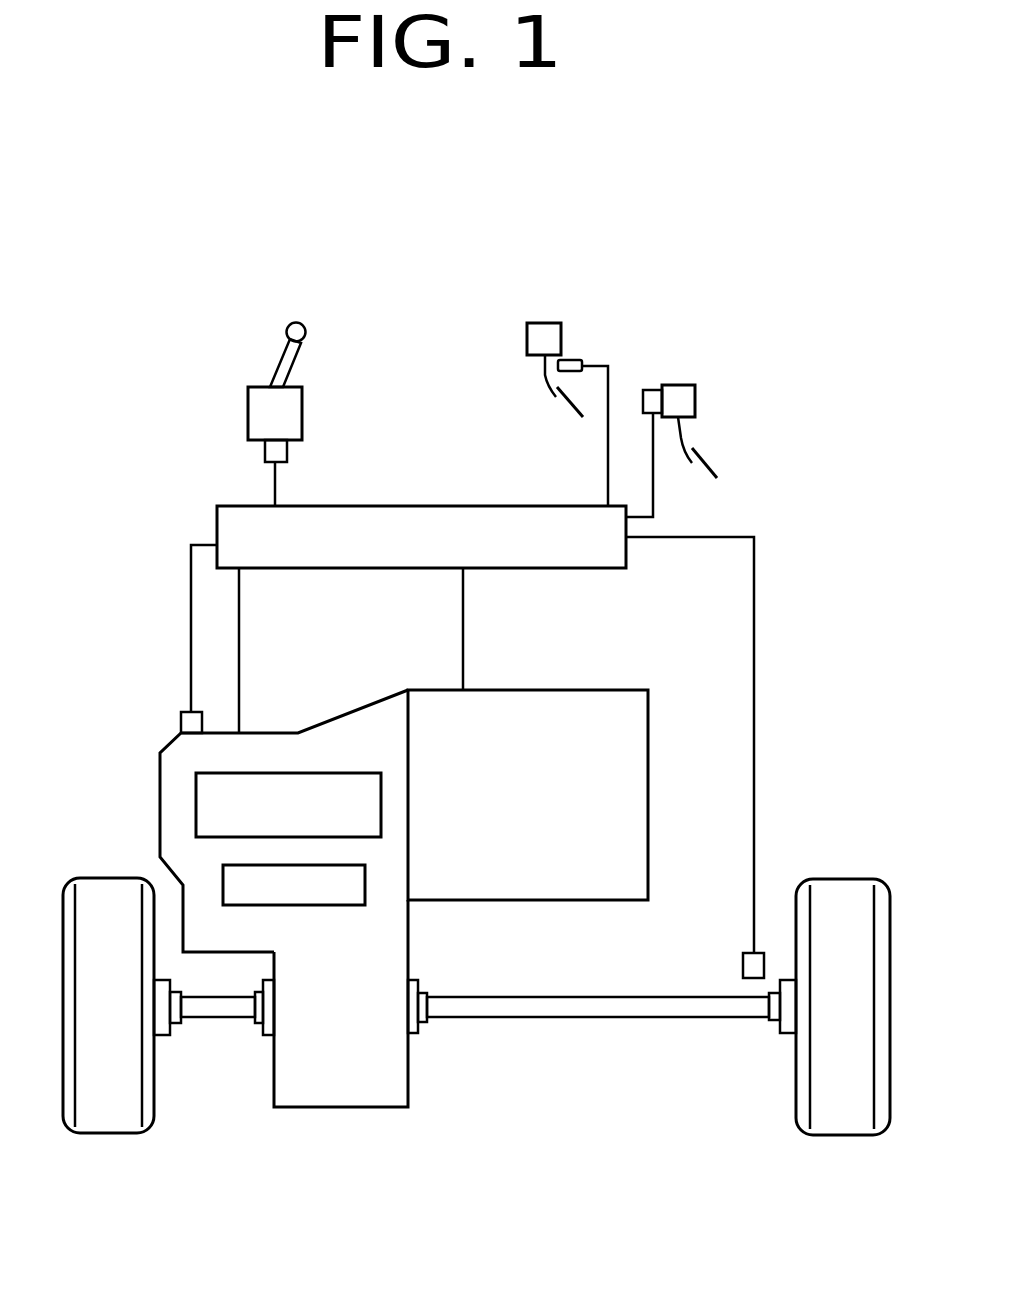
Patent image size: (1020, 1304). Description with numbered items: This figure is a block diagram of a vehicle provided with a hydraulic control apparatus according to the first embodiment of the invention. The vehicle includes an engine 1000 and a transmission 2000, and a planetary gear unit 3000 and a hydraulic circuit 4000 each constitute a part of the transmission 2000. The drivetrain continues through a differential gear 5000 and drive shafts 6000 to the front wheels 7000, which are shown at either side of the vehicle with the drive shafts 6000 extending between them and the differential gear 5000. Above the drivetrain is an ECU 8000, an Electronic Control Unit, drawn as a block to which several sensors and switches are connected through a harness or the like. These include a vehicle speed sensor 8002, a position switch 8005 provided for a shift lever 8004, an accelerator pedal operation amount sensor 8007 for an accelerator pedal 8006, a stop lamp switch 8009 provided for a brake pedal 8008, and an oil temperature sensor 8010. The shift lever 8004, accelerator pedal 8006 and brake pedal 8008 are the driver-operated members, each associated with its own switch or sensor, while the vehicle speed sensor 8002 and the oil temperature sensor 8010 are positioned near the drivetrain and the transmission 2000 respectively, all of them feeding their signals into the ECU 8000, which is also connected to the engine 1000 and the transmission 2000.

The engine 1000 is at (563, 690).
The transmission 2000 is at (270, 732).
The planetary gear unit 3000 is at (283, 772).
The hydraulic circuit 4000 is at (328, 907).
The differential gear 5000 is at (343, 1108).
The drive shafts 6000 is at (220, 1018).
The front wheels 7000 is at (105, 878).
The ECU 8000 is at (513, 502).
The vehicle speed sensor 8002 is at (743, 967).
The shift lever 8004 is at (292, 360).
The position switch 8005 is at (263, 452).
The accelerator pedal 8006 is at (685, 433).
The accelerator pedal operation amount sensor 8007 is at (655, 380).
The brake pedal 8008 is at (555, 388).
The stop lamp switch 8009 is at (570, 360).
The oil temperature sensor 8010 is at (182, 725).